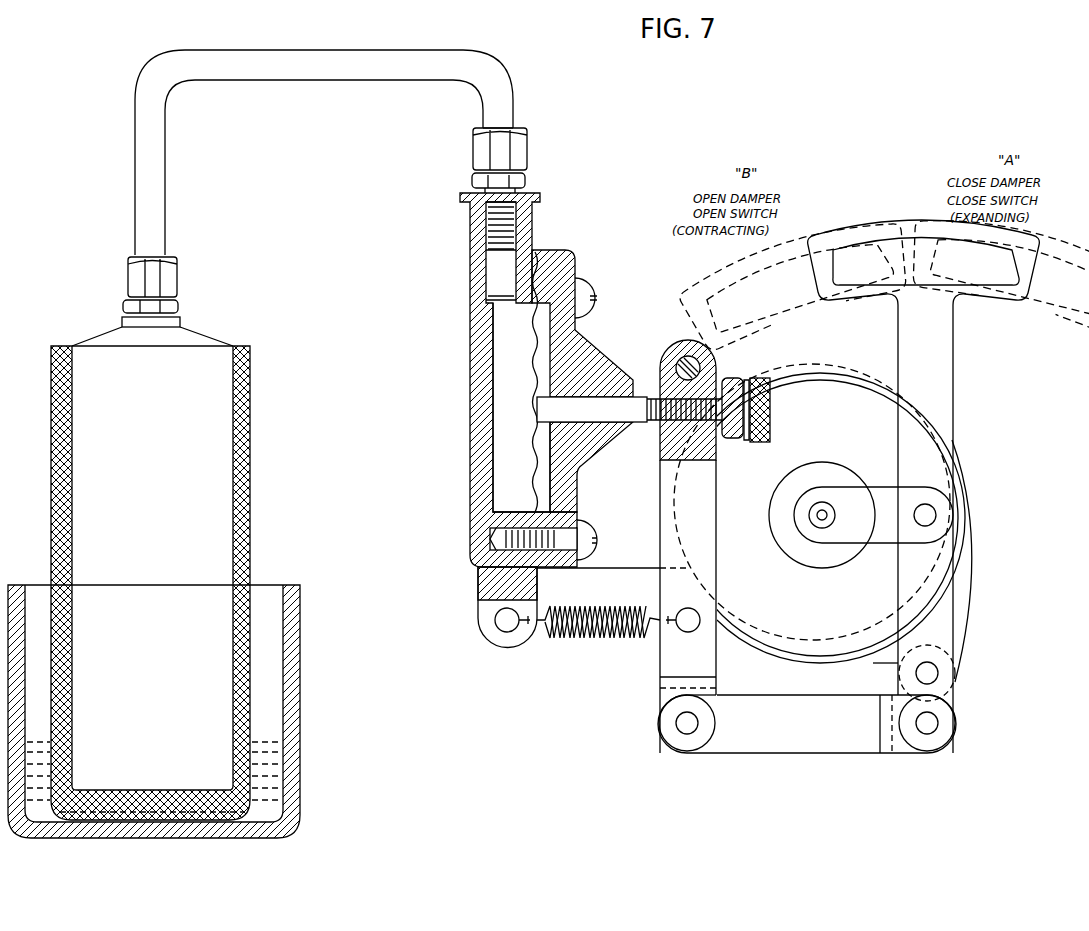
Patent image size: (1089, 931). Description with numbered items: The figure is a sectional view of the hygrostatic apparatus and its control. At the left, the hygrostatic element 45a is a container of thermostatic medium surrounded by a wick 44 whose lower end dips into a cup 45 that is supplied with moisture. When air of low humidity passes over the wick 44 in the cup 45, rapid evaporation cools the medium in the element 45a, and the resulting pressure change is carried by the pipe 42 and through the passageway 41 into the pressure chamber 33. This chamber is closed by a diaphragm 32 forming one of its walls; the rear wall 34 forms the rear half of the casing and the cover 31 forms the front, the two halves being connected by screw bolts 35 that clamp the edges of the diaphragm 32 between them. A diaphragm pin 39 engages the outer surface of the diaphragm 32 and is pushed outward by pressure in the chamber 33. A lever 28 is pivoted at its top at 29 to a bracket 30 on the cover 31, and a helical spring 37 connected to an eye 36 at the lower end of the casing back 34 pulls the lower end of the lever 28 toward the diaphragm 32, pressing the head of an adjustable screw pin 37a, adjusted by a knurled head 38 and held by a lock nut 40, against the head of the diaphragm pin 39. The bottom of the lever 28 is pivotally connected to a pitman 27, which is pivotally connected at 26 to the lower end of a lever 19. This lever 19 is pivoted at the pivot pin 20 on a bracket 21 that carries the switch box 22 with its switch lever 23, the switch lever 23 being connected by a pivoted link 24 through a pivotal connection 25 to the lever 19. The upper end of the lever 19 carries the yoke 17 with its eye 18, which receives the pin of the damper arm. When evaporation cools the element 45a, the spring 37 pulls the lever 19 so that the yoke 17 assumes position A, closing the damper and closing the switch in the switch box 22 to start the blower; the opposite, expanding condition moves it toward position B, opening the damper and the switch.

The yoke 17 is at (862, 230).
The eye 18 is at (904, 246).
The lever 19 is at (953, 360).
The pivot pin 20 is at (938, 673).
The bracket 21 is at (966, 578).
The switch box 22 is at (777, 646).
The switch lever 23 is at (822, 510).
The pivoted link 24 is at (879, 487).
The pivotal connection 25 is at (933, 512).
The pivotal connection 26 is at (927, 735).
The pitman 27 is at (753, 753).
The lever 28 is at (668, 643).
The pivot 29 is at (691, 358).
The bracket 30 is at (605, 342).
The cover 31 is at (573, 266).
The diaphragm 32 is at (532, 318).
The pressure chamber 33 is at (498, 355).
The rear wall 34 is at (470, 434).
The screw bolts 35 is at (586, 287).
The eye 36 is at (498, 627).
The helical spring 37 is at (584, 641).
The adjustable screw pin 37a is at (749, 380).
The knurled head 38 is at (766, 378).
The diaphragm pin 39 is at (616, 387).
The lock nut 40 is at (733, 378).
The passageway 41 is at (497, 262).
The pipe 42 is at (367, 82).
The wick 44 is at (250, 470).
The cup 45 is at (300, 632).
The hygrostatic element 45a is at (217, 393).